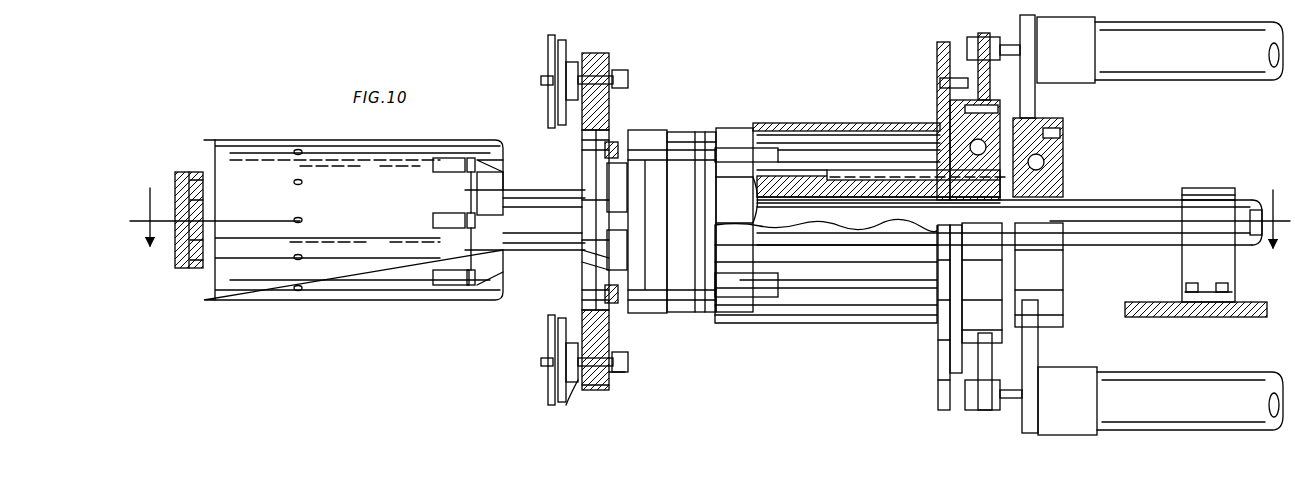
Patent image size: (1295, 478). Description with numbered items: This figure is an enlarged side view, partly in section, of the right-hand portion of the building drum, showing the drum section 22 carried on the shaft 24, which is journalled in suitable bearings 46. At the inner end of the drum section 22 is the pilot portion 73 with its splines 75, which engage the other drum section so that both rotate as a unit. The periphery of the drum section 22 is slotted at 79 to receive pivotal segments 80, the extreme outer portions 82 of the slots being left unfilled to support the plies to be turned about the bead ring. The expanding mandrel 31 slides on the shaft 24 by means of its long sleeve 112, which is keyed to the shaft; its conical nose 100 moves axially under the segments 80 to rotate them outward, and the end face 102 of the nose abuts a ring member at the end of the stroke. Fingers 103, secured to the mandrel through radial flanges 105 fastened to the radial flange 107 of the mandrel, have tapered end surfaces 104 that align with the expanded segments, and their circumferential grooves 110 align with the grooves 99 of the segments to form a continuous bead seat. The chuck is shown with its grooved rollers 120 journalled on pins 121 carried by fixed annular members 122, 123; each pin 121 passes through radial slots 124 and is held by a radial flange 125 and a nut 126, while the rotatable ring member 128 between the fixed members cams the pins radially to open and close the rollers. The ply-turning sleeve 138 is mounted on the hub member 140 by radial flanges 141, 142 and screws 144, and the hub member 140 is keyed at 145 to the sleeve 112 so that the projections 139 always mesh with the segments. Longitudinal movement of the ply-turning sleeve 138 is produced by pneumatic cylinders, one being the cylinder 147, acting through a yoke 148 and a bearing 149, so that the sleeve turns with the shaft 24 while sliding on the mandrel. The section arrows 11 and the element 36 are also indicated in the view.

The section line 11 is at (705, 208).
The drum section 22 is at (340, 140).
The shaft 24 is at (1132, 188).
The expanding mandrel 31 is at (598, 218).
The housing 36 is at (880, 325).
The bearings 46 is at (1205, 68).
The pilot portion 73 is at (188, 270).
The splines 75 is at (178, 258).
The slots 79 is at (440, 160).
The pivotal segments 80 is at (443, 174).
The extreme outer portions of the slots 82 is at (500, 168).
The grooves of the segments 99 is at (472, 174).
The conical nose 100 is at (592, 262).
The end face 102 is at (586, 253).
The fingers 103 is at (650, 152).
The tapered end surfaces 104 is at (608, 272).
The radial flanges 105 is at (690, 132).
The radial flange of the mandrel 107 is at (726, 128).
The circumferential grooves 110 is at (615, 142).
The sleeve 112 is at (790, 178).
The grooved rollers 120 is at (548, 385).
The pins 121 is at (618, 366).
The fixed annular member 122 is at (585, 390).
The fixed annular member 123 is at (605, 391).
The radial slots 124 is at (611, 376).
The radial flange 125 is at (576, 380).
The nut 126 is at (628, 360).
The rotatable ring member 128 is at (596, 53).
The ply-turning sleeve 138 is at (845, 323).
The projections 139 is at (760, 300).
The hub member 140 is at (930, 195).
The radial flange 141 is at (944, 165).
The radial flange 142 is at (947, 100).
The screws 144 is at (963, 70).
The key 145 is at (872, 172).
The pneumatic cylinder 147 is at (1165, 380).
The yoke 148 is at (1040, 352).
The bearing 149 is at (1065, 165).